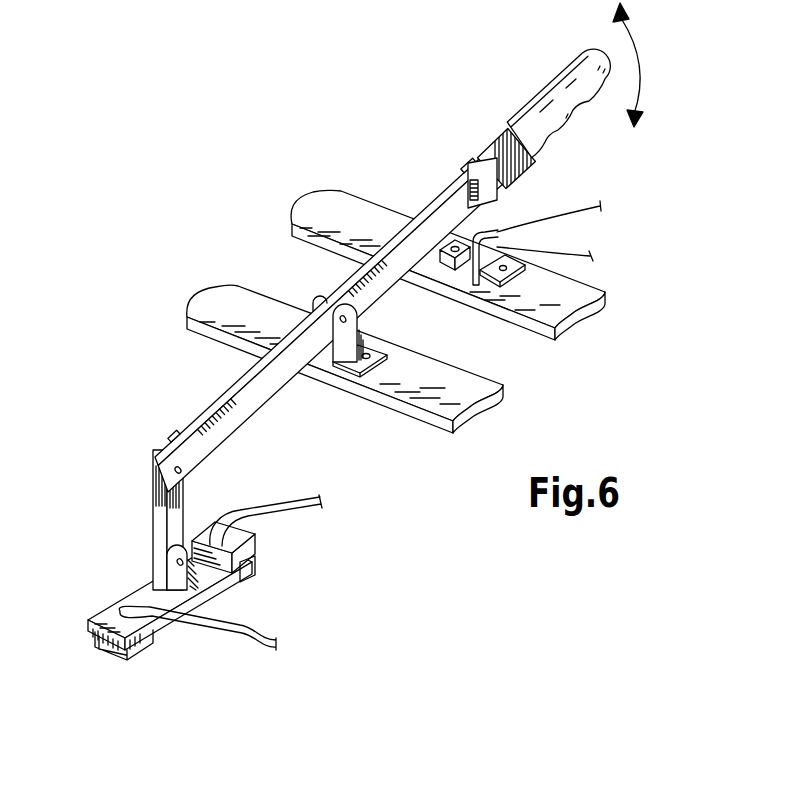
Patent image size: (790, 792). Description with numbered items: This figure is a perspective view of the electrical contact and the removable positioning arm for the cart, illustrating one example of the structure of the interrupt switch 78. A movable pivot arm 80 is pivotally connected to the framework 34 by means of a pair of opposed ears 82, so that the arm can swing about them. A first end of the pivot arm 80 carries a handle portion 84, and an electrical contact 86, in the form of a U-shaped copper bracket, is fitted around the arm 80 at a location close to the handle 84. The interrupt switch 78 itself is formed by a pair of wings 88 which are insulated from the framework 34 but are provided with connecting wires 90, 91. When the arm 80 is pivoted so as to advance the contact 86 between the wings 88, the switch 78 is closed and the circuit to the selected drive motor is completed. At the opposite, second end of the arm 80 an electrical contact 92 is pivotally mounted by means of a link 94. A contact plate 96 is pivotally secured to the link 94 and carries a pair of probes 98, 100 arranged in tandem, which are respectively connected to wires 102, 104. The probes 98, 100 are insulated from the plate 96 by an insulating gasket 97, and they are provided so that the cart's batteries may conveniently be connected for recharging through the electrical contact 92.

The framework 34 is at (523, 320).
The interrupt switch 78 is at (549, 231).
The pivot arm 80 is at (452, 180).
The opposed ears 82 is at (317, 305).
The handle portion 84 is at (543, 100).
The electrical contact 86 is at (493, 190).
The wings 88 is at (508, 253).
The connecting wire 90 is at (563, 212).
The connecting wire 91 is at (594, 251).
The electrical contact 92 is at (299, 546).
The link 94 is at (160, 512).
The contact plate 96 is at (132, 603).
The insulating gasket 97 is at (250, 537).
The probe 98 is at (253, 568).
The probe 100 is at (133, 660).
The wire 102 is at (288, 498).
The wire 104 is at (235, 625).